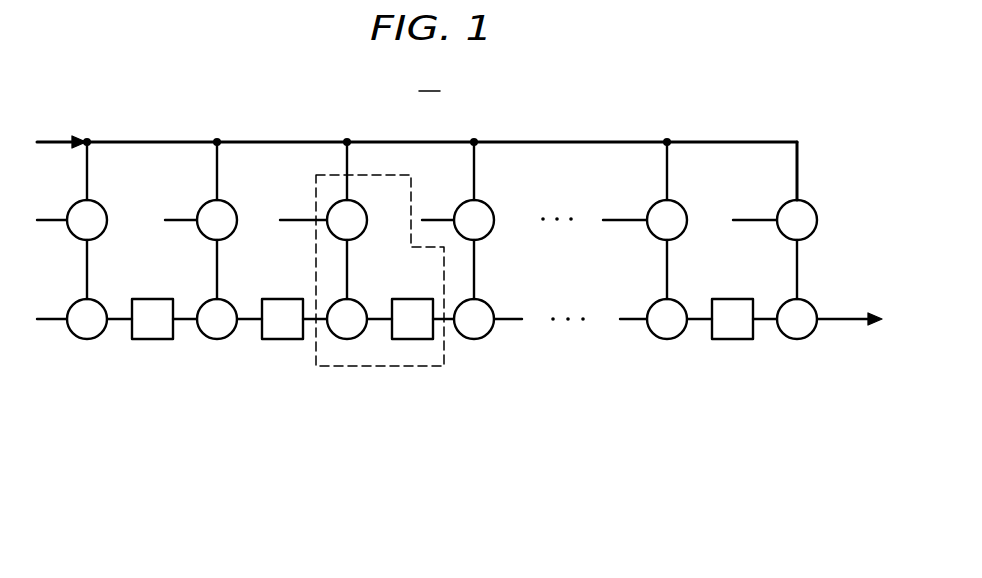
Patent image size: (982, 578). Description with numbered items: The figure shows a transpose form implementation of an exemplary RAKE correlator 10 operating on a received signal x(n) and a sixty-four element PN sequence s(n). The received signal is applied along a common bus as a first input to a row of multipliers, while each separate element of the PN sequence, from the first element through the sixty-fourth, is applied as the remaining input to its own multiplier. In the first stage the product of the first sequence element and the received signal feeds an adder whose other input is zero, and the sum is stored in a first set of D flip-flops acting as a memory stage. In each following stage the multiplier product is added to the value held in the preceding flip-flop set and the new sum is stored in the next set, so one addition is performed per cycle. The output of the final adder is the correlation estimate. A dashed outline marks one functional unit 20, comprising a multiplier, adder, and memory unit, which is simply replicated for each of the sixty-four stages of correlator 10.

The RAKE correlator 10 is at (458, 247).
The functional unit 20 is at (371, 367).